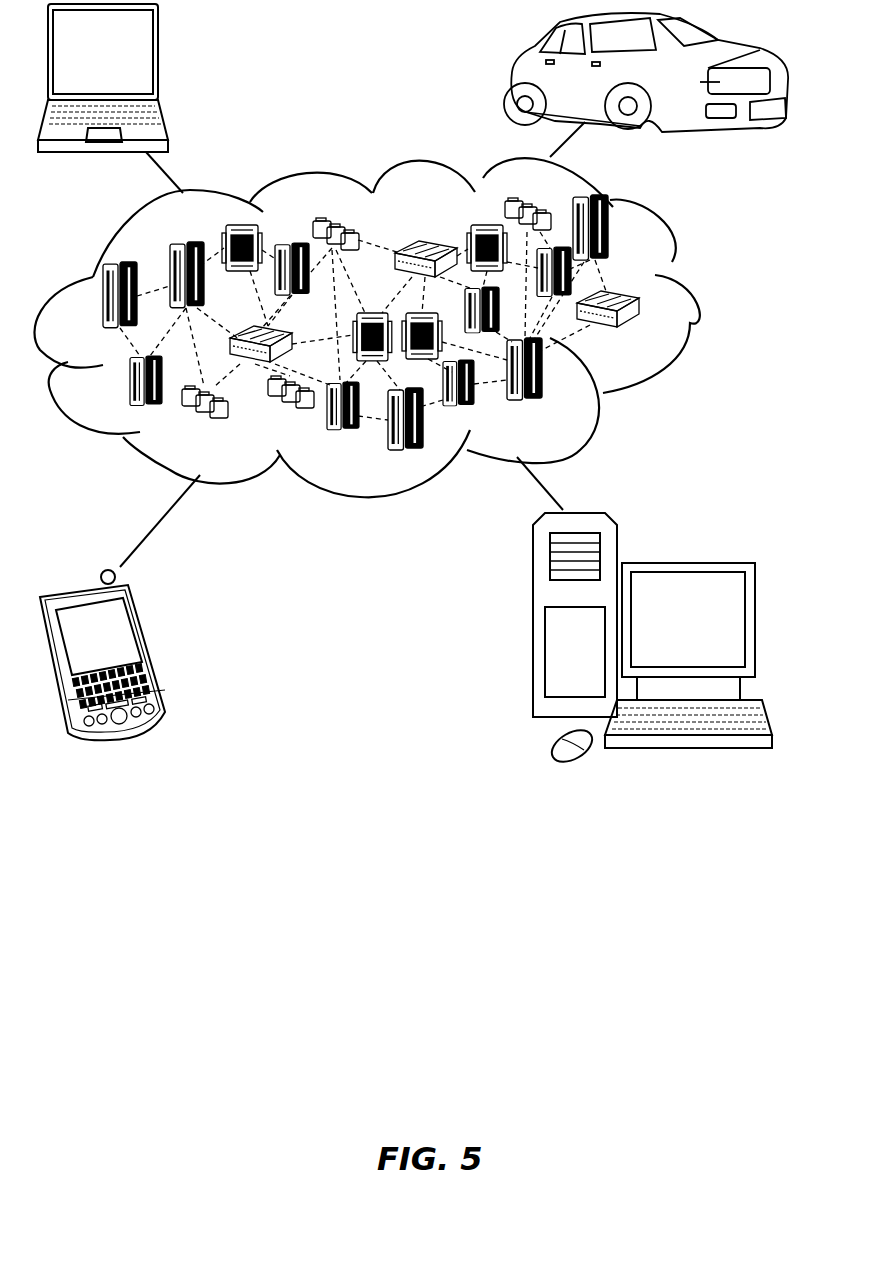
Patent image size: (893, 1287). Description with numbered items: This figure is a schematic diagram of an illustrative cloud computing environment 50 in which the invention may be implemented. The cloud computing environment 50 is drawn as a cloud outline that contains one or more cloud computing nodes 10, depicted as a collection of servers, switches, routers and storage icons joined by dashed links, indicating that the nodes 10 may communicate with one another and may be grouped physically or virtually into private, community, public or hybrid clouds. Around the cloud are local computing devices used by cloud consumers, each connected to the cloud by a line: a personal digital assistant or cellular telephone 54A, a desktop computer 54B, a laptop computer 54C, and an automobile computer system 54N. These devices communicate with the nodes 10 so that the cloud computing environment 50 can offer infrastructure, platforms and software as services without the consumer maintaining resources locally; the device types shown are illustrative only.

The cloud computing nodes 10 is at (648, 342).
The cloud computing environment 50 is at (688, 303).
The personal digital assistant or cellular telephone 54A is at (150, 650).
The desktop computer 54B is at (686, 563).
The laptop computer 54C is at (158, 60).
The automobile computer system 54N is at (513, 72).